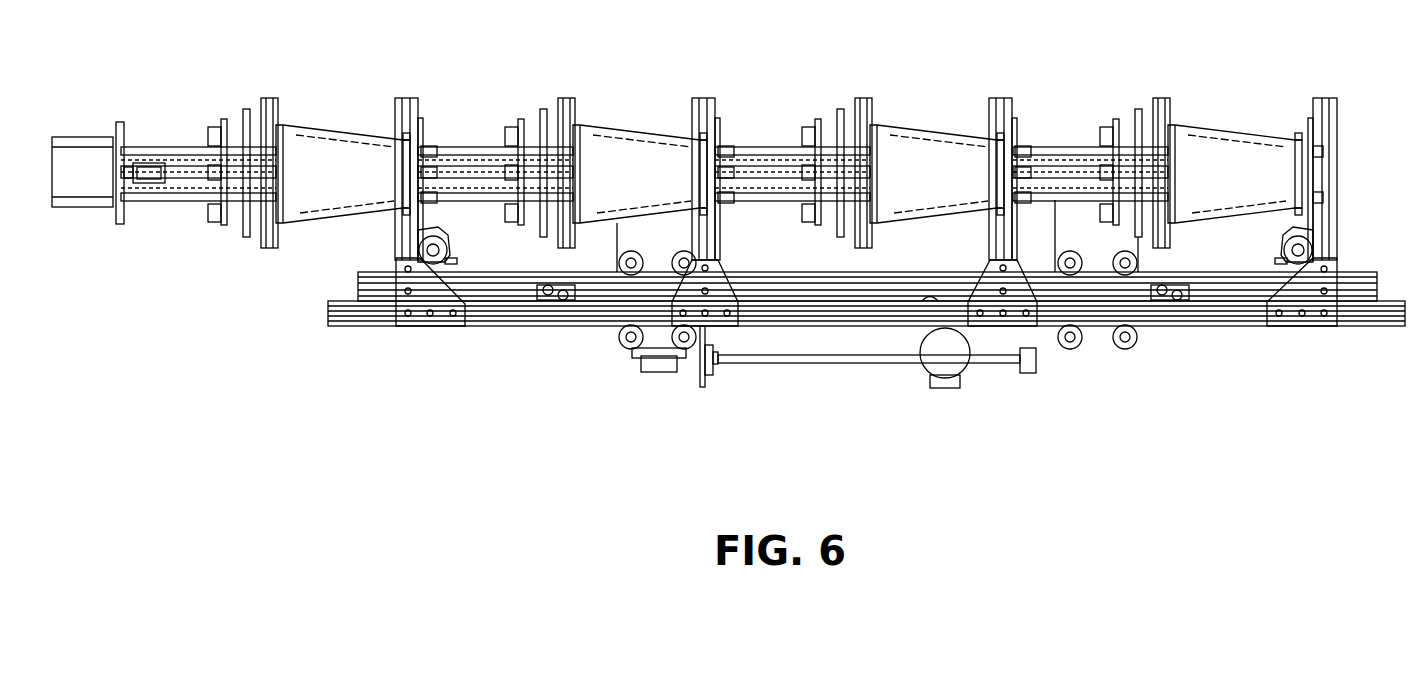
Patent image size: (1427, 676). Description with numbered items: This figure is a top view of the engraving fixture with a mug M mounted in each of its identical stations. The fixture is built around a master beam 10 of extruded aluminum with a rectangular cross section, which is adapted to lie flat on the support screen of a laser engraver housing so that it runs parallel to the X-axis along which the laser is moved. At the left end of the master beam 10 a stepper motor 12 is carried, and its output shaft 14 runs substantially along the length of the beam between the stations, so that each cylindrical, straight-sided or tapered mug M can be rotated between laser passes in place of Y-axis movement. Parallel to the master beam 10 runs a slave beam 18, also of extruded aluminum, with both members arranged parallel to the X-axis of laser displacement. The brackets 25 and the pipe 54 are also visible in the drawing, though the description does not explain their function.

The stepper motor 12 is at (74, 137).
The master beam 10 is at (152, 147).
The output shaft 14 is at (192, 178).
The mug M is at (325, 125).
The bracket 25 is at (427, 326).
The slave beam 18 is at (1390, 301).
The pipe 54 is at (806, 364).